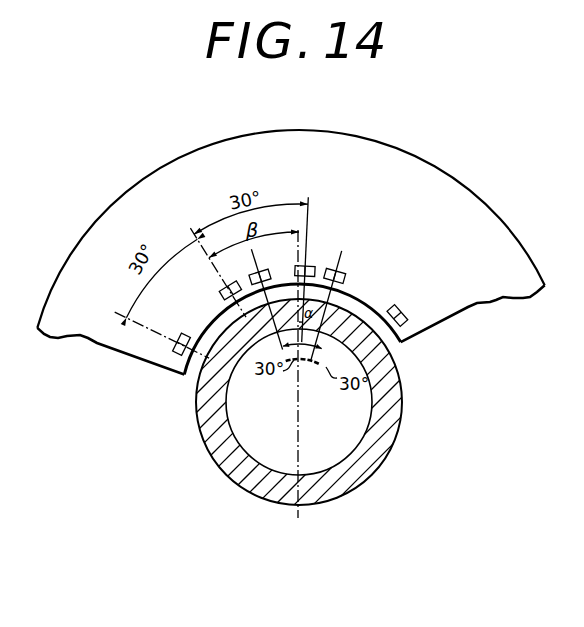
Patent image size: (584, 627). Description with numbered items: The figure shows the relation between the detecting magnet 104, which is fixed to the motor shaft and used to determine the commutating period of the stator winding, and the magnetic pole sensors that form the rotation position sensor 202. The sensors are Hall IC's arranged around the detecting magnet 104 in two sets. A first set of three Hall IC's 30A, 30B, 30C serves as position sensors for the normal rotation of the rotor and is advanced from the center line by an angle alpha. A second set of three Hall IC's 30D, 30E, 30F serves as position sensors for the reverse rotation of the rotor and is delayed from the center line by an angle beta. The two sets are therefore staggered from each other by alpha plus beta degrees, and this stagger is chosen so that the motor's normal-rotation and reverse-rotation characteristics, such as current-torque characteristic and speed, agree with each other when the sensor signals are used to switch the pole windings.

The rotation position sensor 202 is at (504, 219).
The detecting magnet 104 is at (403, 402).
The Hall IC 30A is at (263, 272).
The Hall IC 30B is at (345, 277).
The Hall IC 30C is at (407, 313).
The Hall IC 30D is at (176, 355).
The Hall IC 30E is at (221, 296).
The Hall IC 30F is at (310, 266).